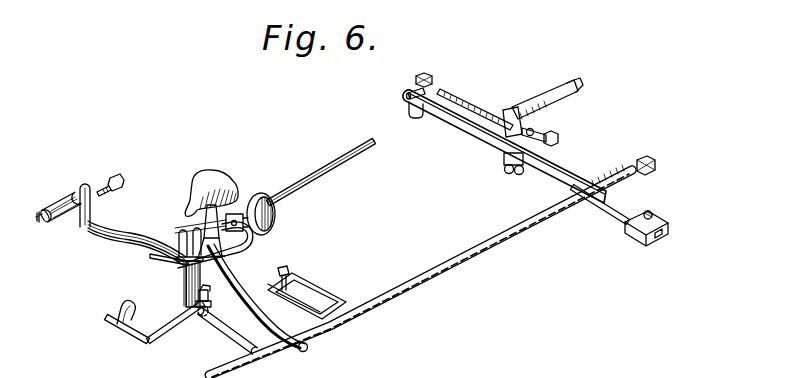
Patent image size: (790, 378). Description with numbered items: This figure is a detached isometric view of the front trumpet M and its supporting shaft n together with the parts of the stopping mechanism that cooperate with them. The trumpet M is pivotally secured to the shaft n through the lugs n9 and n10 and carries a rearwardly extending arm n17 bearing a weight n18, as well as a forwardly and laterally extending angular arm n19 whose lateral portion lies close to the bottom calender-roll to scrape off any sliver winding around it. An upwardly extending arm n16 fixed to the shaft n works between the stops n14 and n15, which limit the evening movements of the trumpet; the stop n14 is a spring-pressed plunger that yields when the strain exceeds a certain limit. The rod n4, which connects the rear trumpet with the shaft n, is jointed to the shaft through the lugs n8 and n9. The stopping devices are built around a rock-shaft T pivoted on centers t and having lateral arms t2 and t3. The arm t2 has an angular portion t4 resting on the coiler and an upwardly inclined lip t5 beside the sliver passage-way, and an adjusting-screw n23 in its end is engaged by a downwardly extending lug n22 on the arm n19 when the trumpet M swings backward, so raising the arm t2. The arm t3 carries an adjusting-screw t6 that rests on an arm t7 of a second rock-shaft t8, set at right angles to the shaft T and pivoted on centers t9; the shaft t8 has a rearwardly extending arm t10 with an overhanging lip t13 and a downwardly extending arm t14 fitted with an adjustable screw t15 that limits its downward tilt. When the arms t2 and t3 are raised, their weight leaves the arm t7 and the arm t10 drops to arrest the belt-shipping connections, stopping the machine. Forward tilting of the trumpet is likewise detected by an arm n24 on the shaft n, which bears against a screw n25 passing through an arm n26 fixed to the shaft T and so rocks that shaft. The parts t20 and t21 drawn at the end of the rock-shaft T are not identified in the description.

The rock-shaft T is at (445, 264).
The rod n4 is at (313, 168).
The stop n14 is at (58, 201).
The upwardly-extending arm n16 is at (84, 184).
The stop n15 is at (113, 175).
The shaft n is at (125, 229).
The lug n8 is at (180, 231).
The lug n9 is at (183, 289).
The downwardly-extending lug n22 is at (195, 303).
The adjusting-screw n23 is at (210, 297).
The trumpet M is at (212, 173).
The rearwardly-extending arm n17 is at (240, 212).
The weight n18 is at (277, 217).
The angular arm n19 is at (150, 255).
The lug n10 is at (242, 247).
The upwardly-inclined lip t5 is at (126, 304).
The laterally-extending angular portion t4 is at (145, 345).
The arm t2 is at (247, 330).
The arm n24 is at (307, 302).
The arm n26 is at (303, 298).
The screw n25 is at (296, 280).
The arm t3 is at (473, 138).
The second rock-shaft t8 is at (481, 119).
The rearwardly-extending arm t10 is at (532, 110).
The overhanging lip t13 is at (572, 90).
The centers t9 is at (432, 84).
The adjusting-screw t6 is at (411, 95).
The arm t7 is at (418, 118).
The downwardly-extending arm t14 is at (504, 165).
The adjustable screw t15 is at (514, 172).
The centers t is at (639, 161).
The rod t20 is at (608, 212).
The box t21 is at (662, 226).